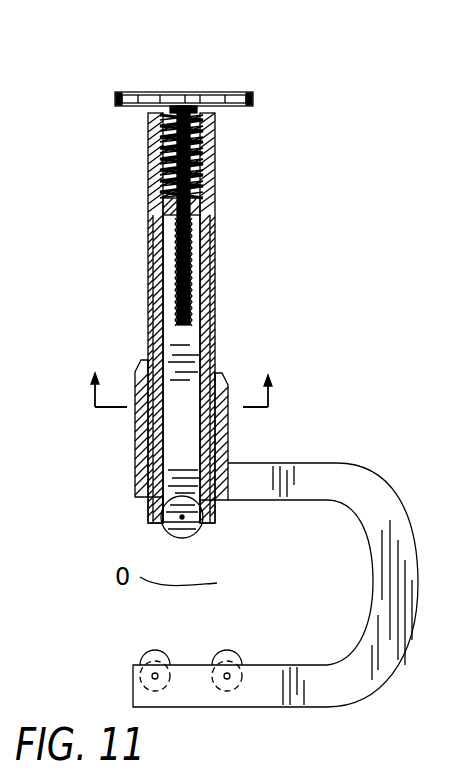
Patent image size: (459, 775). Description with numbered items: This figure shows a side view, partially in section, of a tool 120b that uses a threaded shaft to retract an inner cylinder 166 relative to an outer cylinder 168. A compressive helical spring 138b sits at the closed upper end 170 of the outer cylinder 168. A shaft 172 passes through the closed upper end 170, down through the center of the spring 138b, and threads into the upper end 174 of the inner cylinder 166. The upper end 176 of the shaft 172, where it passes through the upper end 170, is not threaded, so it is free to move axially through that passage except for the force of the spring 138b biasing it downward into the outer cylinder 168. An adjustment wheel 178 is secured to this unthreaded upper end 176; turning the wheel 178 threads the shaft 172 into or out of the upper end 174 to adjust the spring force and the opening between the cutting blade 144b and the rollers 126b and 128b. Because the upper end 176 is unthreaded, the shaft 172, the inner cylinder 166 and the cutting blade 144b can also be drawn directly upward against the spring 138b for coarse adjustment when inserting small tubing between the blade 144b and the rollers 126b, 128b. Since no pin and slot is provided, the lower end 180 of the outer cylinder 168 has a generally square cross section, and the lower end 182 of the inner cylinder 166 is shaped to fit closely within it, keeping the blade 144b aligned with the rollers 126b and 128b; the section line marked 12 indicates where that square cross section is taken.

The adjustment wheel 178 is at (181, 92).
The upper end of shaft 176 is at (222, 118).
The upper end of outer cylinder 170 is at (150, 116).
The outer cylinder 168 is at (150, 320).
The shaft 172 is at (148, 230).
The upper end of inner cylinder 174 is at (208, 203).
The compressive spring 138b is at (208, 167).
The inner cylinder 166 is at (212, 340).
The lower end of outer cylinder 180 is at (135, 433).
The lower end of inner cylinder 182 is at (148, 505).
The cutting blade 144b is at (200, 535).
The tool 120b is at (253, 359).
The roller 126b is at (150, 662).
The roller 128b is at (227, 662).
The section line 12 is at (182, 393).